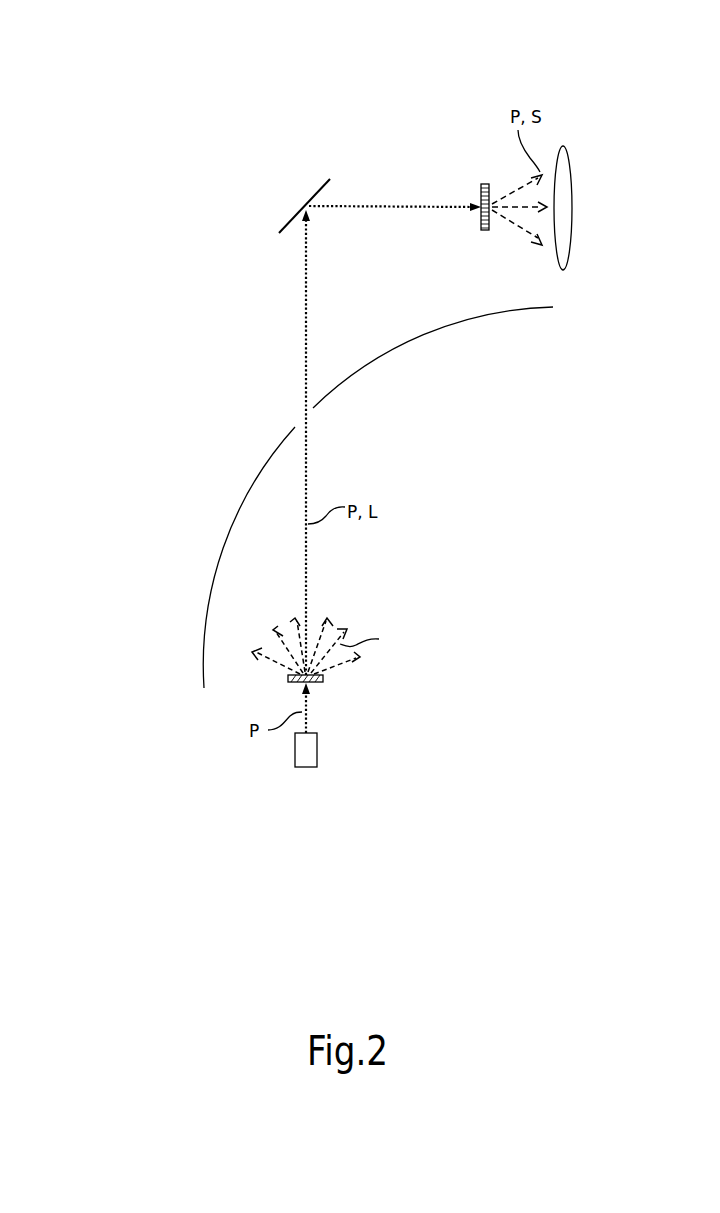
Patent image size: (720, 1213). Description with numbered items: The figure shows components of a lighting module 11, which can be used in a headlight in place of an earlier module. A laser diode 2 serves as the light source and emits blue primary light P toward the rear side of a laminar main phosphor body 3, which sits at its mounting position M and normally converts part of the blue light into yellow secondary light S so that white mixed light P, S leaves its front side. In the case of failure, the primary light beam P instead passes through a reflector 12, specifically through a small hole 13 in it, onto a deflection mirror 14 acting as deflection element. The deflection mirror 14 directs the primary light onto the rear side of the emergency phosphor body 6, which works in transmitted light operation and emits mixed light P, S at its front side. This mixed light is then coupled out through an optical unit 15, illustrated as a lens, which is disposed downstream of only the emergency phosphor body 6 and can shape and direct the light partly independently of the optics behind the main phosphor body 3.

The lighting module 11 is at (104, 106).
The deflection mirror 14 is at (297, 218).
The emergency phosphor body 6 is at (485, 183).
The optical unit 15 is at (570, 162).
The reflector 12 is at (527, 312).
The small hole 13 is at (300, 417).
The main phosphor body 3 is at (323, 679).
The laser diode 2 is at (318, 742).